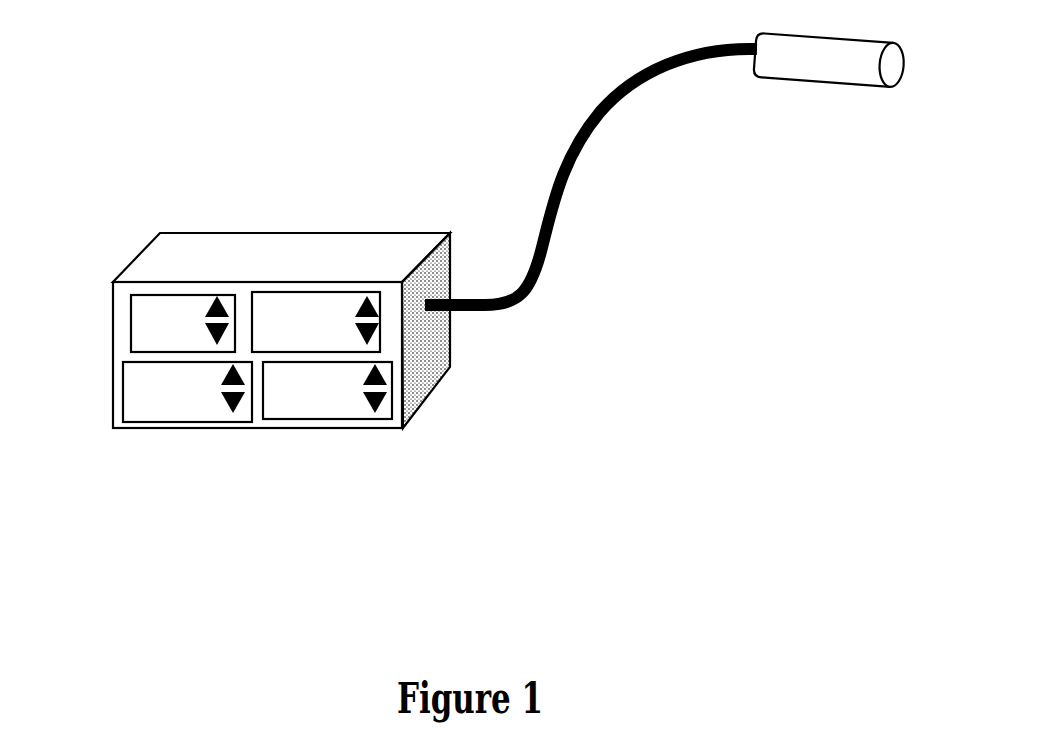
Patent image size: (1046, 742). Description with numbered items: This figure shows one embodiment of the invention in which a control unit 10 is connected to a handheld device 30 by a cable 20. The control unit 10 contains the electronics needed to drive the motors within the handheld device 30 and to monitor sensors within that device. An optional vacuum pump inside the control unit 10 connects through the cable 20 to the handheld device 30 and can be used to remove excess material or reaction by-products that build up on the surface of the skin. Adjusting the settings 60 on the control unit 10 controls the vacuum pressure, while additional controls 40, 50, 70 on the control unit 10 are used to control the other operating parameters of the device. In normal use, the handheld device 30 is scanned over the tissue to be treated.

The control unit 10 is at (293, 270).
The cable 20 is at (563, 168).
The handheld device 30 is at (838, 78).
The controls 40 is at (122, 323).
The controls 50 is at (162, 432).
The settings 60 is at (391, 326).
The controls 70 is at (302, 432).